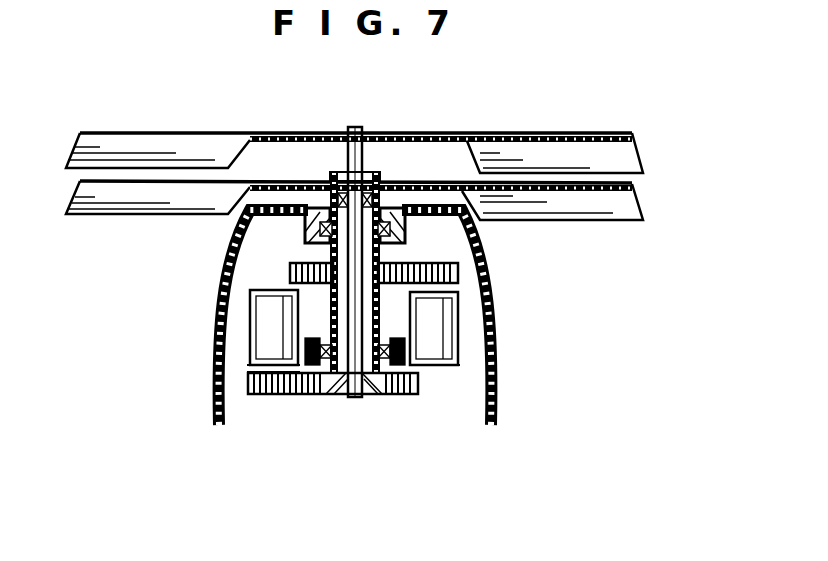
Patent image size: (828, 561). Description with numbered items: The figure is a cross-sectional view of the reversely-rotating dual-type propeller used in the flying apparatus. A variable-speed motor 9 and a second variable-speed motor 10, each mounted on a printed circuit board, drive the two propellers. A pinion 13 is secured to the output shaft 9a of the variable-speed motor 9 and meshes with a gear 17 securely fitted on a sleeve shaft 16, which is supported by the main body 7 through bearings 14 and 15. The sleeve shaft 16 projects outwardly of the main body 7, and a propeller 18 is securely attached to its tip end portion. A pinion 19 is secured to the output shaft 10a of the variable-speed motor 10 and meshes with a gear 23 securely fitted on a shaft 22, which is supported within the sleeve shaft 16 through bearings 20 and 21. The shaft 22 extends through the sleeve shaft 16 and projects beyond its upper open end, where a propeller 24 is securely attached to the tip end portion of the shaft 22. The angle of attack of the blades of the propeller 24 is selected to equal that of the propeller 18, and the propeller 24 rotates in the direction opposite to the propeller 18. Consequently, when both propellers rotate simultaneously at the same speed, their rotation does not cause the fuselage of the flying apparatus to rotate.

The main body 7 is at (496, 373).
The variable-speed motor 9 is at (447, 328).
The output shaft 9a is at (430, 287).
The variable-speed motor 10 is at (262, 323).
The output shaft 10a is at (268, 368).
The pinion 13 is at (458, 272).
The bearing 14 is at (395, 212).
The bearing 15 is at (387, 384).
The sleeve shaft 16 is at (312, 232).
The gear 17 is at (292, 266).
The propeller 18 is at (618, 215).
The pinion 19 is at (257, 394).
The bearing 20 is at (340, 175).
The bearing 21 is at (340, 394).
The shaft 22 is at (370, 172).
The gear 23 is at (418, 384).
The propeller 24 is at (553, 133).